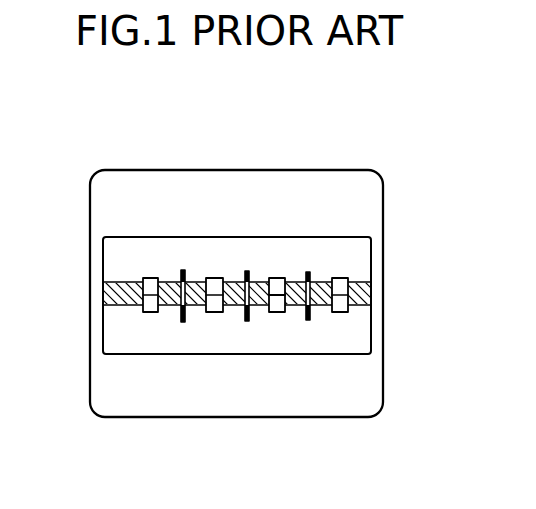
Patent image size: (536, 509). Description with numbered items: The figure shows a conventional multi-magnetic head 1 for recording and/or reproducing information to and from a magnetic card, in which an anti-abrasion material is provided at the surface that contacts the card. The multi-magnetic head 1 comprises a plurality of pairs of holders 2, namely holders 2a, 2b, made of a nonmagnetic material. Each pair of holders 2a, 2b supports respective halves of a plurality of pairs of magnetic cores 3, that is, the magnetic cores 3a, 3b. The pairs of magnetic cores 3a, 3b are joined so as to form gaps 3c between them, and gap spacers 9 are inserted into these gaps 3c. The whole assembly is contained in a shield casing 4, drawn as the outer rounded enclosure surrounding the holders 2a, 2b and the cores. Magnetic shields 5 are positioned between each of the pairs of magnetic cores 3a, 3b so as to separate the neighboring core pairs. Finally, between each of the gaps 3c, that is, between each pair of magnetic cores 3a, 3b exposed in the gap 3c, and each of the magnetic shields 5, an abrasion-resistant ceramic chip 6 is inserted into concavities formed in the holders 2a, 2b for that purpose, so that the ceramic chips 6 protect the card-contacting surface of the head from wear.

The multi-magnetic head 1 is at (203, 162).
The holder 2 is at (353, 329).
The holder 2a is at (115, 337).
The holder 2b is at (125, 248).
The magnetic core 3 is at (309, 274).
The magnetic core 3a is at (277, 308).
The magnetic core 3b is at (281, 278).
The gap 3c is at (145, 303).
The shield casing 4 is at (383, 393).
The magnetic shield 5 is at (338, 278).
The abrasion-resistant ceramic chip 6 is at (112, 283).
The gap spacer 9 is at (345, 292).